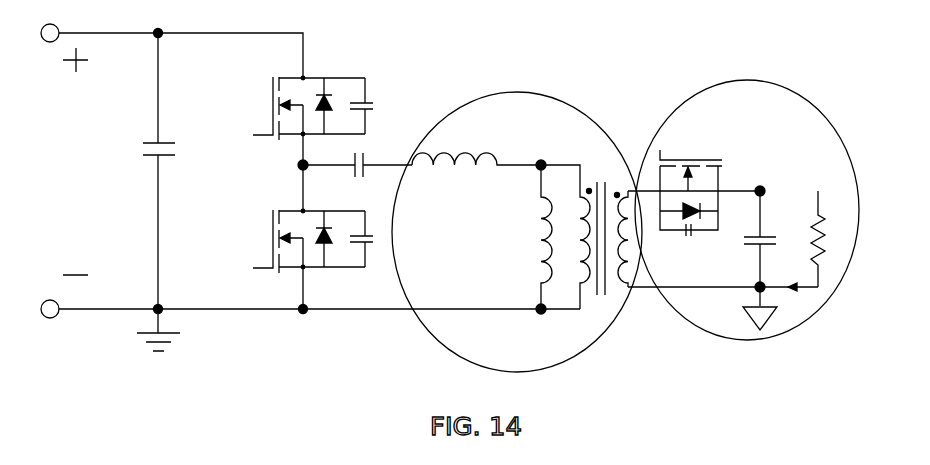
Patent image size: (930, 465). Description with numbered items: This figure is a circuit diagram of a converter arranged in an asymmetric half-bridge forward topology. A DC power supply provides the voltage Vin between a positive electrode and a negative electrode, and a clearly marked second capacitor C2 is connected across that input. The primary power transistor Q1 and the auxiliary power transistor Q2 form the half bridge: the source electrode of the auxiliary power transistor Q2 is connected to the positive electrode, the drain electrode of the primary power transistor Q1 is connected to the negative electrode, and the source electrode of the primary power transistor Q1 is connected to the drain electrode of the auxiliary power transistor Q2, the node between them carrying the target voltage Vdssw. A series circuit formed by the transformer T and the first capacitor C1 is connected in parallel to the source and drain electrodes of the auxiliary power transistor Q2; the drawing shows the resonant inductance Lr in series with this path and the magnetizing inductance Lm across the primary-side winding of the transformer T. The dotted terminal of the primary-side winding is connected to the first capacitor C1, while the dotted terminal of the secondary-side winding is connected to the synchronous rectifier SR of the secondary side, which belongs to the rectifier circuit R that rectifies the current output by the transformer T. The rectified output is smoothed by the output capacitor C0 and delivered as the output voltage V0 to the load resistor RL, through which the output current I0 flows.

The voltage output by the DC power supply Vin is at (64, 171).
The second capacitor C2 is at (142, 171).
The primary power transistor Q1 is at (297, 120).
The auxiliary power transistor Q2 is at (297, 237).
The target voltage Vdssw is at (295, 171).
The first capacitor C1 is at (383, 160).
The resonant inductor Lr is at (476, 178).
The magnetizing inductor Lm is at (526, 237).
The transformer T is at (512, 92).
The synchronous rectifier SR is at (691, 180).
The output voltage V0 is at (783, 180).
The output capacitor C0 is at (740, 239).
The load resistor RL is at (831, 239).
The output current I0 is at (802, 305).
The rectifier circuit R is at (777, 82).